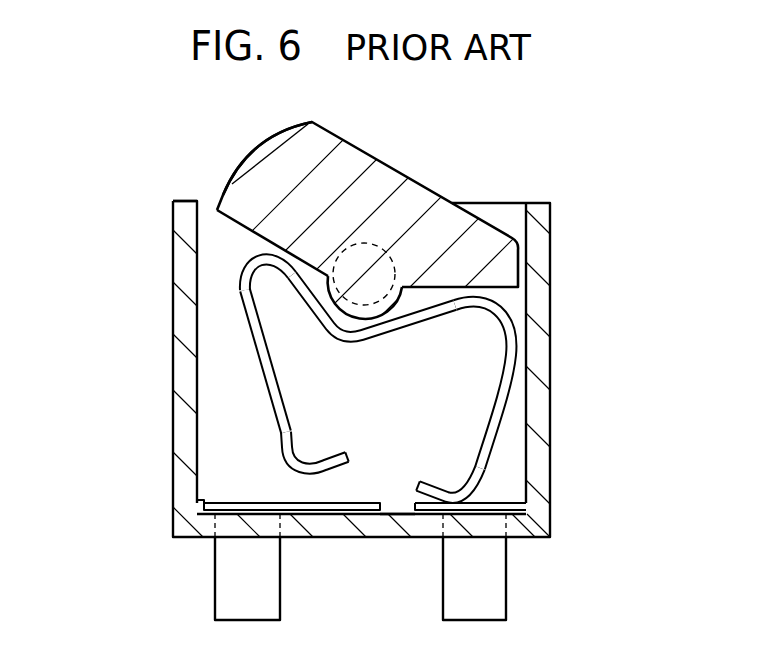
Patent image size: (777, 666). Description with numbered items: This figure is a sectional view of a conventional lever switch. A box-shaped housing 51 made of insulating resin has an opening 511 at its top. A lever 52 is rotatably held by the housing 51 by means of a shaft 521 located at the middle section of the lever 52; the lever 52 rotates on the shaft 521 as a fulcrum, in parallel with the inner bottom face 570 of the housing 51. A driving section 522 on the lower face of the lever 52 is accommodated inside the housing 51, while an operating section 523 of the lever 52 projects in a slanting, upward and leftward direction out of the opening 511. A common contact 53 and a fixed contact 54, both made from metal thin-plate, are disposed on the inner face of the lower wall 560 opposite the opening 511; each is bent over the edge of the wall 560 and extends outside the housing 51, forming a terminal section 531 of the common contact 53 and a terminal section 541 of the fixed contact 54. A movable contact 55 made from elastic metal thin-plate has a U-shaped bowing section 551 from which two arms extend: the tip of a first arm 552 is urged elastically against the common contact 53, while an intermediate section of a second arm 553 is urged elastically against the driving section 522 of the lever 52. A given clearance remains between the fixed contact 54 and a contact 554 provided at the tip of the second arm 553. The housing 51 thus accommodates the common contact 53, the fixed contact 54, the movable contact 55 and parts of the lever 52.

The housing 51 is at (538, 475).
The opening 511 is at (205, 200).
The lever 52 is at (380, 180).
The shaft 521 is at (376, 282).
The driving section 522 is at (240, 236).
The operating section 523 is at (327, 126).
The common contact 53 is at (517, 511).
The terminal section 531 is at (497, 575).
The fixed contact 54 is at (265, 509).
The terminal section 541 is at (243, 563).
The movable contact 55 is at (374, 385).
The U-shaped bowing section 551 is at (506, 318).
The first arm 552 is at (498, 423).
The second arm 553 is at (240, 280).
The contact 554 is at (284, 468).
The wall 560 is at (388, 528).
The inner bottom face 570 is at (223, 338).